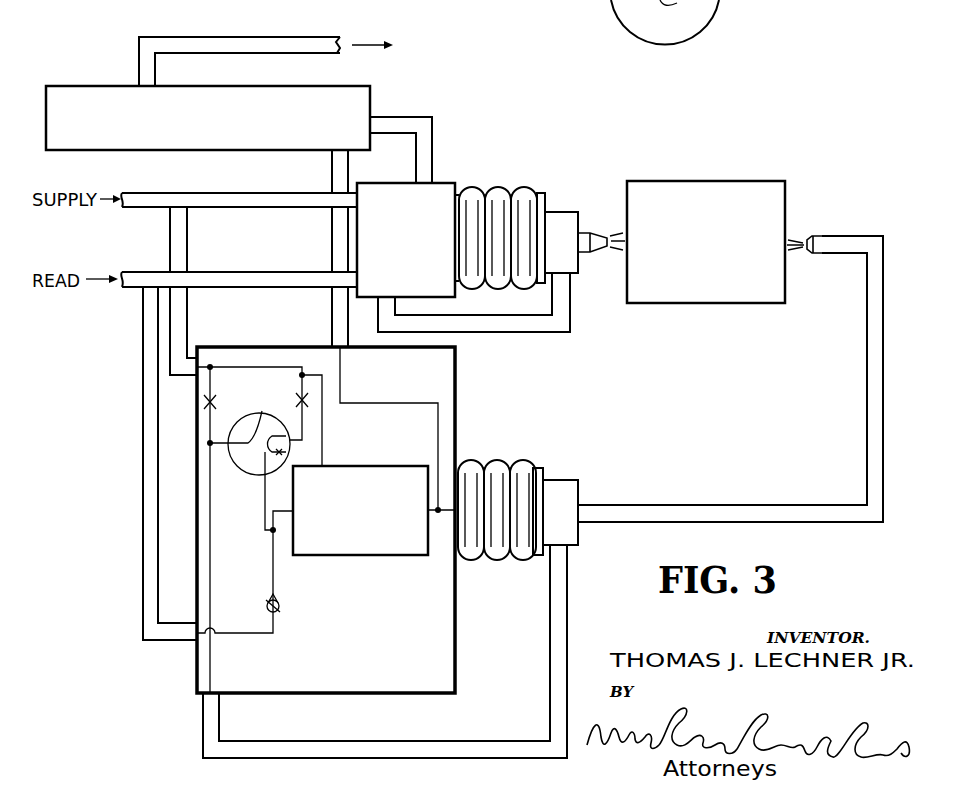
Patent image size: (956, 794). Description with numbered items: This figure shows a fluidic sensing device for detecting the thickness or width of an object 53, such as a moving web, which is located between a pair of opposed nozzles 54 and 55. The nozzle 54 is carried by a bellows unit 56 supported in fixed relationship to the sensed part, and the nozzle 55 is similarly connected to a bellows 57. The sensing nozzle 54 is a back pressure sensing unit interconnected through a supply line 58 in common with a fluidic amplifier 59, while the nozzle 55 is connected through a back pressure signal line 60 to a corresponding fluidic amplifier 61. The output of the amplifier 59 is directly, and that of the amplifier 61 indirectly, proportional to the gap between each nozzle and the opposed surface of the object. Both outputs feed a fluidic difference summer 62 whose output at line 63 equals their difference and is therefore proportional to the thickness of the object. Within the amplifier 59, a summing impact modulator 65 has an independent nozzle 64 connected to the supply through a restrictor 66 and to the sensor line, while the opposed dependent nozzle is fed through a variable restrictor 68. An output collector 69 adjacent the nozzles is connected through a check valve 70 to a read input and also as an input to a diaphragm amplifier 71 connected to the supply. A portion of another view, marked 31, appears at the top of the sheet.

The element of adjacent figure 31 is at (630, 12).
The object 53 is at (697, 297).
The nozzle 54 is at (866, 218).
The nozzle 55 is at (594, 233).
The bellows unit 56 is at (537, 460).
The bellows 57 is at (530, 180).
The supply line 58 is at (568, 601).
The fluidic amplifier 59 is at (187, 695).
The back pressure signal line 60 is at (542, 325).
The fluidic amplifier 61 is at (350, 251).
The fluidic difference summer 62 is at (353, 99).
The output line 63 is at (274, 40).
The independent nozzle 64 is at (247, 475).
The summing impact modulator 65 is at (242, 416).
The restrictor 66 is at (210, 402).
The variable restrictor 68 is at (314, 399).
The output collector 69 is at (273, 438).
The check valve 70 is at (284, 602).
The diaphragm amplifier 71 is at (366, 552).